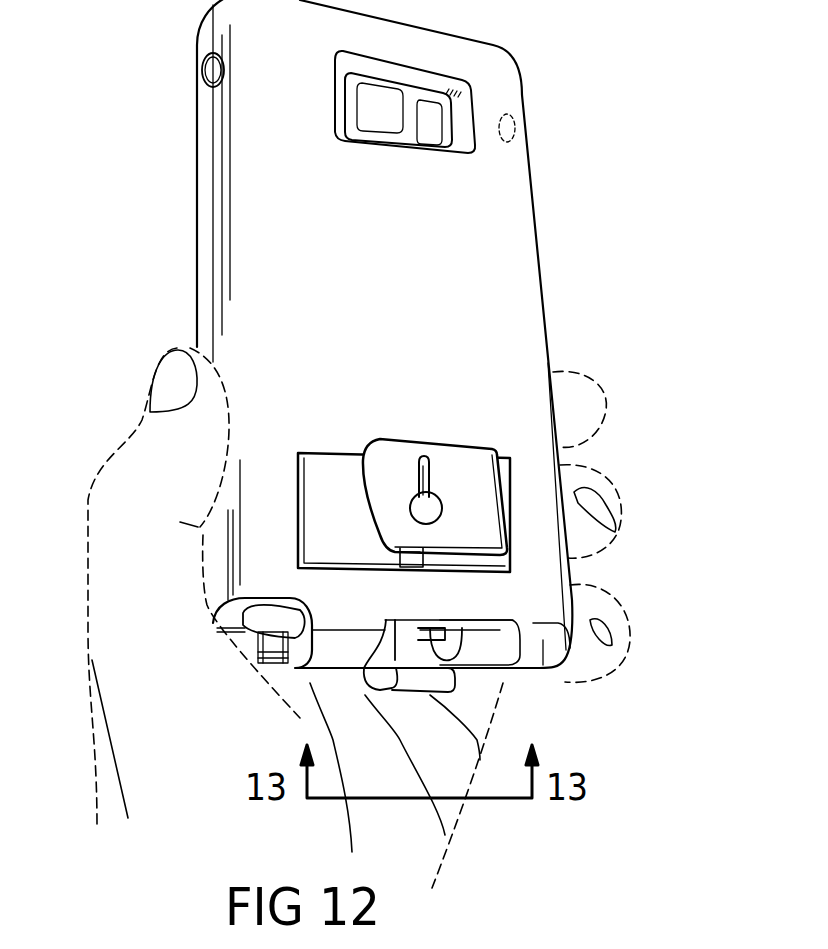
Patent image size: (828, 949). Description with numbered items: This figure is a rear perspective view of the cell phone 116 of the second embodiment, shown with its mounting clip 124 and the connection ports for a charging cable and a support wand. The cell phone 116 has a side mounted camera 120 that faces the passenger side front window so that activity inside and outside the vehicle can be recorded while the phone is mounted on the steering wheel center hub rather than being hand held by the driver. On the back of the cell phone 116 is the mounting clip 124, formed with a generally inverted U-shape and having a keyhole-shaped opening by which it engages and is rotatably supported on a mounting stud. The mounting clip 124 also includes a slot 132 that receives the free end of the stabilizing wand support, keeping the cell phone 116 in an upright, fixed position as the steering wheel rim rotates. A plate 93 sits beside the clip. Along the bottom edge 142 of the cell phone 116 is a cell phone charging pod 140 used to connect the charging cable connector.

The cell phone type electronic device 116 is at (508, 230).
The side mounted camera 120 is at (213, 70).
The mounting plate 93 is at (296, 473).
The mounting clip 124 is at (457, 447).
The slot 132 is at (405, 570).
The cell phone charging pod 140 is at (408, 640).
The bottom edge 142 is at (545, 655).